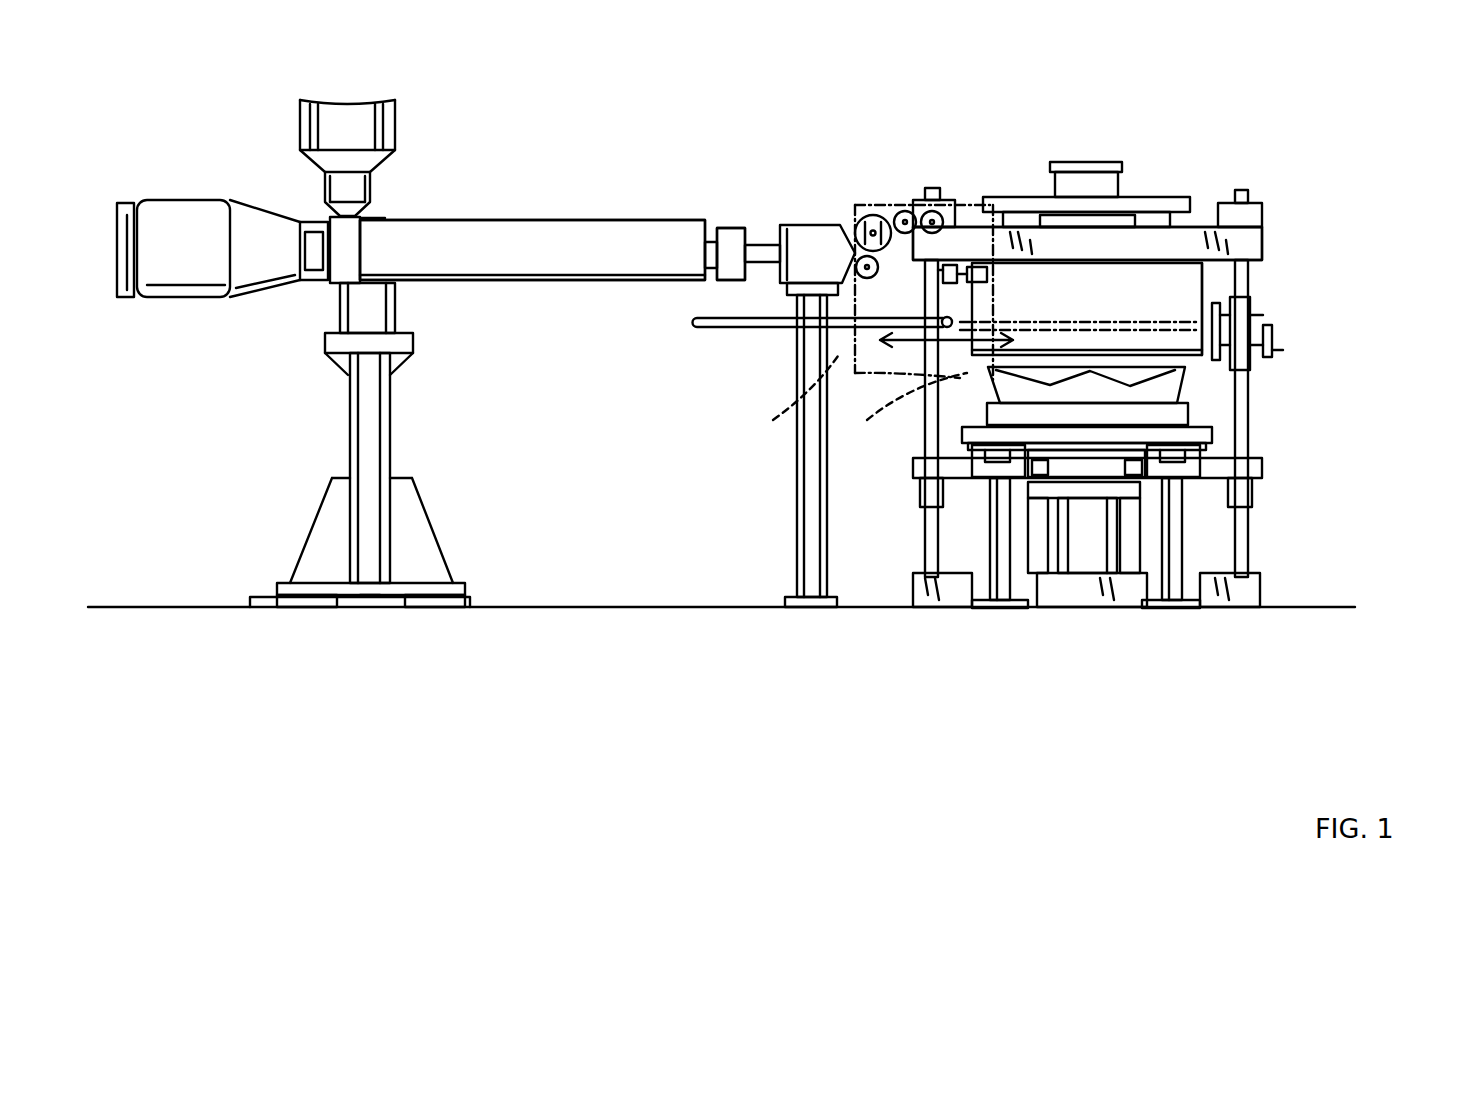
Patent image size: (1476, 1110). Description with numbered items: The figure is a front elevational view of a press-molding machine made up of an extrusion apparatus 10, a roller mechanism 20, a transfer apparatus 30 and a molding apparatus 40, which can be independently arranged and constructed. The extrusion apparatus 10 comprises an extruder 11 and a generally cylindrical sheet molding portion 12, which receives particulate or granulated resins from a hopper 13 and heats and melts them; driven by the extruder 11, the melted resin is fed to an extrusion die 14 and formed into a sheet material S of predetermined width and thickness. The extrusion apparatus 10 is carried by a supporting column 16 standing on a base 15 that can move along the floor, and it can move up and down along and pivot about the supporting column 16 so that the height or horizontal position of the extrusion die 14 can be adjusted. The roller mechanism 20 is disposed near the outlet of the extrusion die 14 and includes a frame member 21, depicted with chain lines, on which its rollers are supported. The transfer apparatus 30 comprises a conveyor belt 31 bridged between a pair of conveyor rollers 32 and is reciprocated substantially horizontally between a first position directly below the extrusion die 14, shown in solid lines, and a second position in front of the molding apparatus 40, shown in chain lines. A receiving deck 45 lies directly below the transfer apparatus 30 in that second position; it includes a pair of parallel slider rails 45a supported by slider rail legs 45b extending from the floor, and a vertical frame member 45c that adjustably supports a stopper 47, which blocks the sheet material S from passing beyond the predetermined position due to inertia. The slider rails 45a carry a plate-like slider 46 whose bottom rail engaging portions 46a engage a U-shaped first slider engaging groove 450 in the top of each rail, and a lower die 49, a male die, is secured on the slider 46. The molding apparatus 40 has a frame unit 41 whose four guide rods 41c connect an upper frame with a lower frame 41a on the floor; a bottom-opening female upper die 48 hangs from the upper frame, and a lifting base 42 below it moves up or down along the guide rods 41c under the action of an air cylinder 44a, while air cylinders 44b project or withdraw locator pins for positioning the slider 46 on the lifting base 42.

The extrusion apparatus 10 is at (533, 180).
The extruder 11 is at (186, 228).
The sheet molding portion 12 is at (548, 268).
The hopper 13 is at (372, 133).
The extrusion die 14 is at (812, 237).
The base 15 is at (255, 595).
The supporting column 16 is at (362, 425).
The roller mechanism 20 is at (885, 196).
The frame member 21 is at (793, 408).
The transfer apparatus 30 is at (767, 340).
The conveyor belt 31 is at (738, 317).
The conveyor rollers 32 is at (693, 325).
The molding apparatus 40 is at (1185, 178).
The frame unit 41 is at (1240, 243).
The lower frame 41a is at (1245, 593).
The guide rods 41c is at (1243, 416).
The lifting base 42 is at (1250, 467).
The air cylinder 44a is at (1087, 550).
The air cylinders 44b is at (1040, 570).
The receiving deck 45 is at (1208, 533).
The slider rails 45a is at (1234, 510).
The slider rail legs 45b is at (995, 540).
The vertical frame member 45c is at (1237, 312).
The slider 46 is at (982, 440).
The rail engaging portions 46a is at (997, 460).
The stopper 47 is at (1210, 350).
The upper die 48 is at (1170, 283).
The lower die 49 is at (1160, 393).
The first slider engaging groove 450 is at (1190, 438).
The sheet material S is at (920, 285).